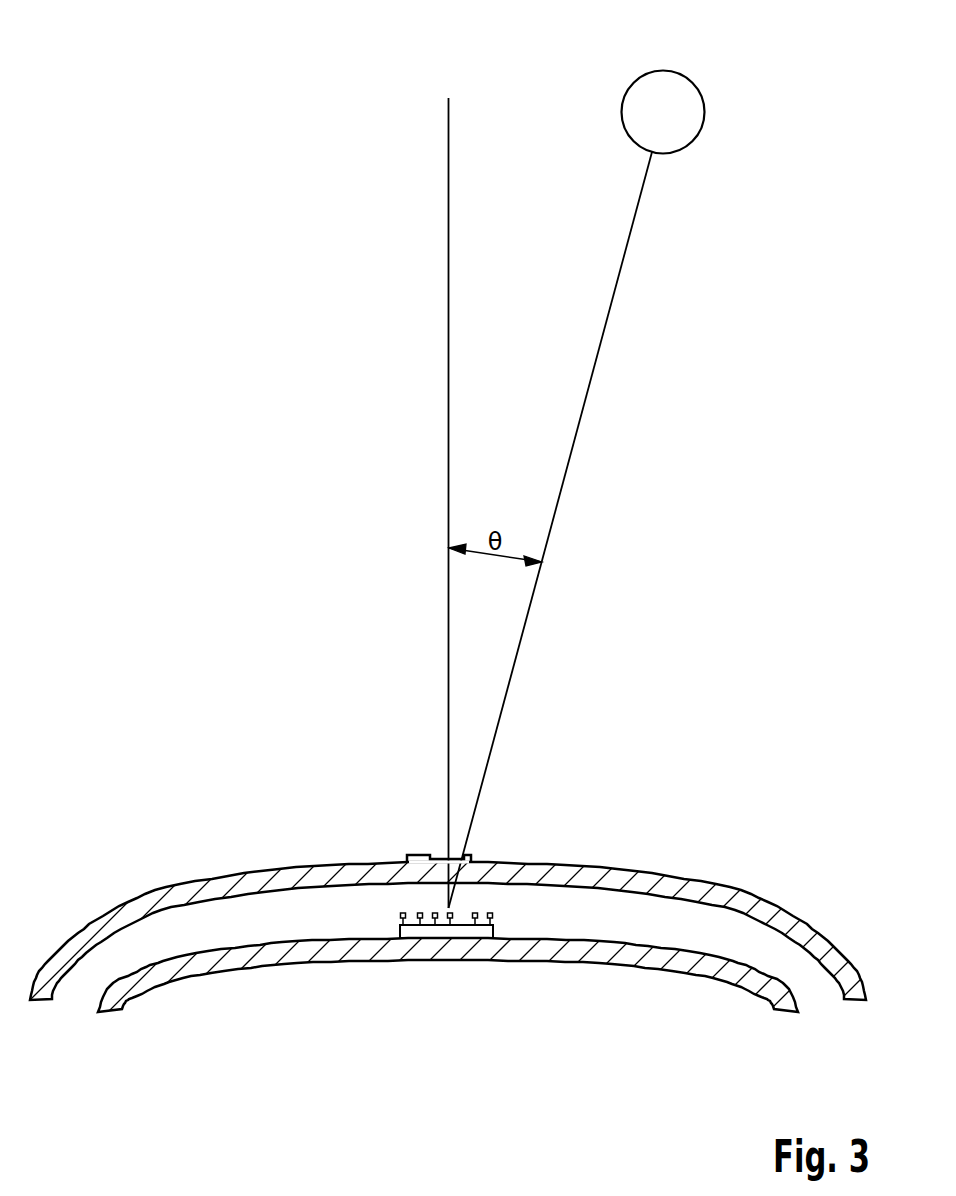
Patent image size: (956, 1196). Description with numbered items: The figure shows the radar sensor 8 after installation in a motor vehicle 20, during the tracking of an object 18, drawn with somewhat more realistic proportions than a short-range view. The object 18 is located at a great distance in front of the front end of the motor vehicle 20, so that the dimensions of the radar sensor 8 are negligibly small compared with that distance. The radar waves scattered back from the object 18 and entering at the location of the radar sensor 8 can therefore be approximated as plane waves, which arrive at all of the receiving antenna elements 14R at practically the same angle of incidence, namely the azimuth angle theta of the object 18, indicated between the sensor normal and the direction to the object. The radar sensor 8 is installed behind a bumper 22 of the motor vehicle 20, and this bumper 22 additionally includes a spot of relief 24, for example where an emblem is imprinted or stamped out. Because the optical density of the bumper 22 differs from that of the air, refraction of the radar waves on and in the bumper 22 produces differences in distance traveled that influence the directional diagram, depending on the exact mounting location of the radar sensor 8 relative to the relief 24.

The object 18 is at (664, 70).
The bumper 22 is at (731, 887).
The relief 24 is at (420, 855).
The motor vehicle 20 is at (672, 966).
The radar sensor 8 is at (448, 938).
The receiving antenna elements 14R is at (400, 917).